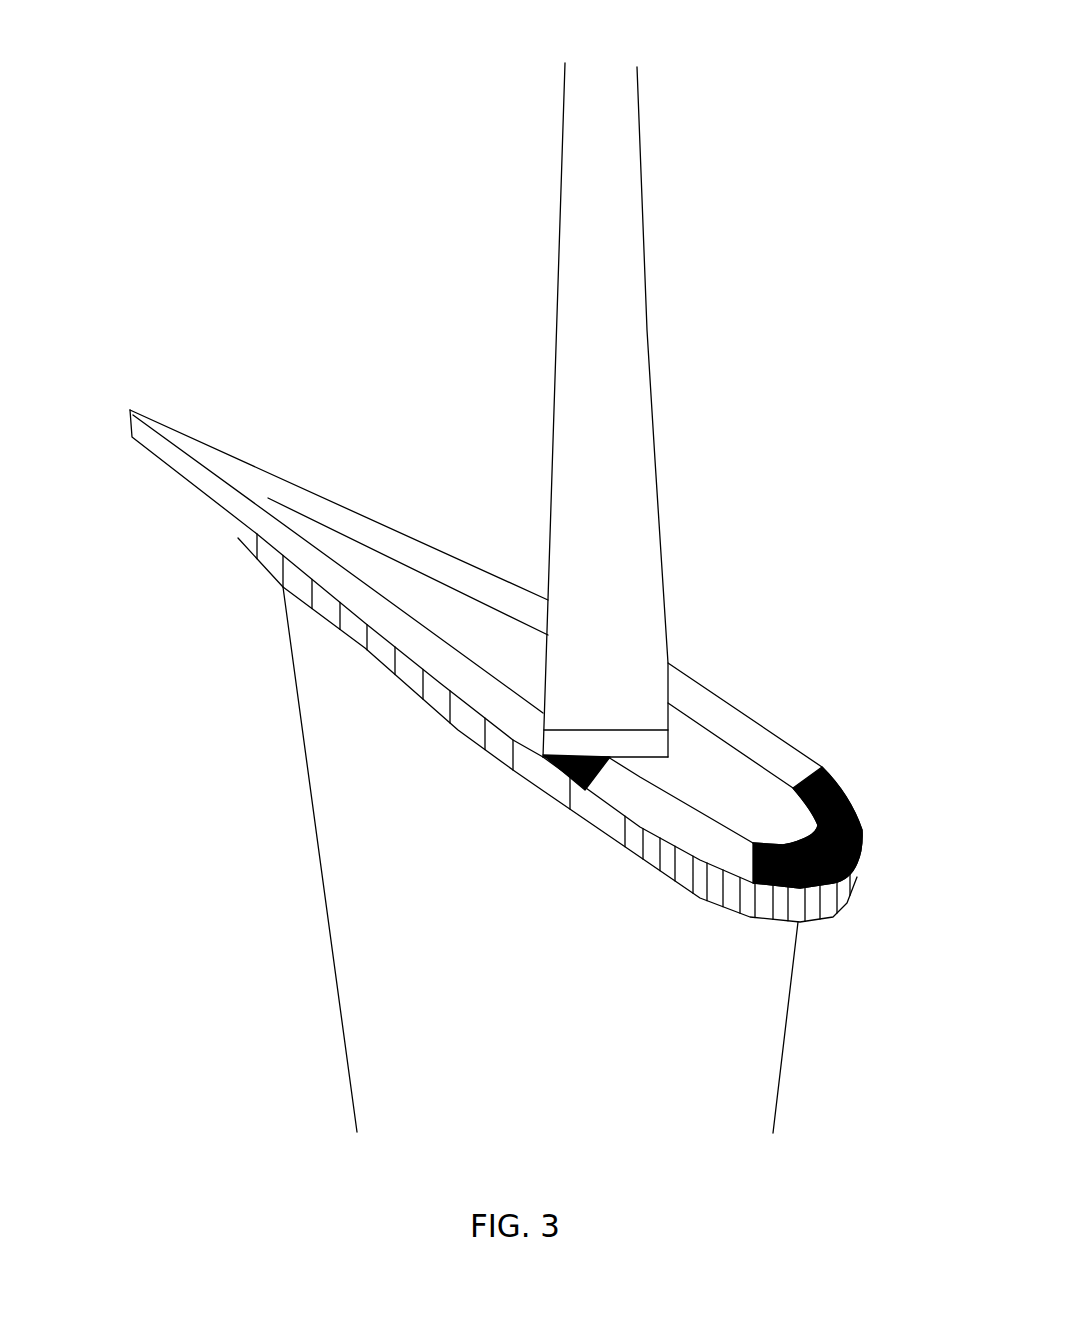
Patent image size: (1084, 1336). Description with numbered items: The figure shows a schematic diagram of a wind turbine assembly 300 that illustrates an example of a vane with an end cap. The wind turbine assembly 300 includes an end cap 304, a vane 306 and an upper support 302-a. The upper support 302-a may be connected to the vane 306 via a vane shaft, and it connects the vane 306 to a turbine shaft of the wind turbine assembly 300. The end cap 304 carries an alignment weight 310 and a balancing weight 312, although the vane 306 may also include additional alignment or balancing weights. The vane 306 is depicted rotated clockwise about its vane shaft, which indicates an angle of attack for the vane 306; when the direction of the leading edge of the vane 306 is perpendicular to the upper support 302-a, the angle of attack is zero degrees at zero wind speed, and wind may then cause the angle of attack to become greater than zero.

The wind turbine assembly 300 is at (195, 95).
The upper support 302-a is at (653, 425).
The end cap 304 is at (328, 497).
The vane 306 is at (795, 1022).
The alignment weight 310 is at (598, 782).
The balancing weight 312 is at (860, 813).